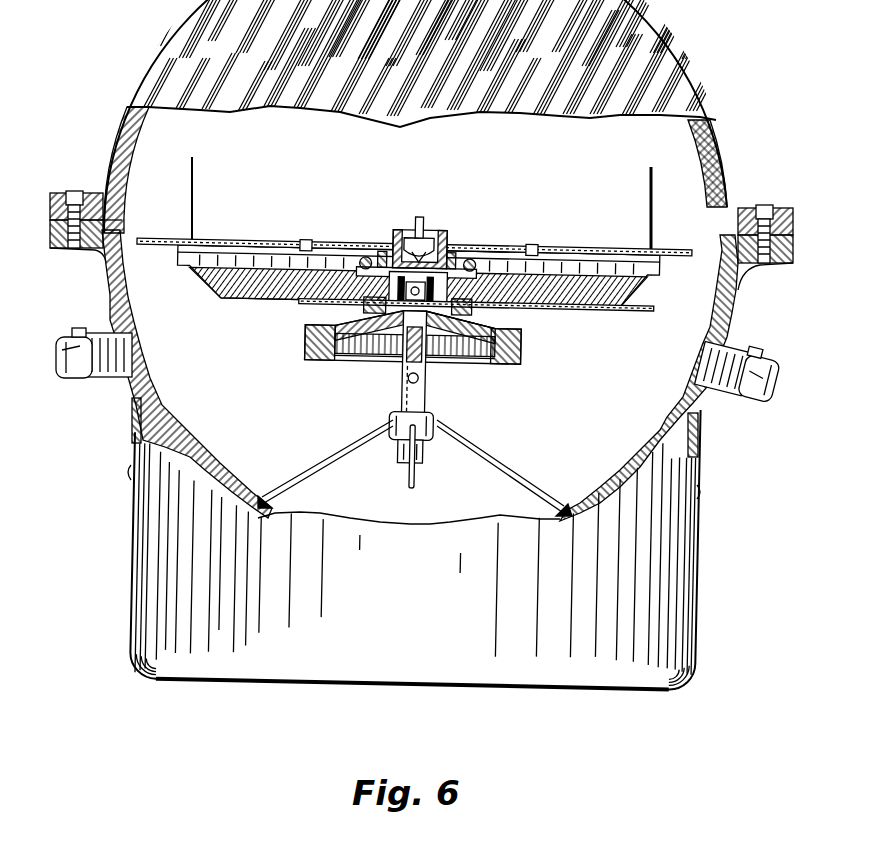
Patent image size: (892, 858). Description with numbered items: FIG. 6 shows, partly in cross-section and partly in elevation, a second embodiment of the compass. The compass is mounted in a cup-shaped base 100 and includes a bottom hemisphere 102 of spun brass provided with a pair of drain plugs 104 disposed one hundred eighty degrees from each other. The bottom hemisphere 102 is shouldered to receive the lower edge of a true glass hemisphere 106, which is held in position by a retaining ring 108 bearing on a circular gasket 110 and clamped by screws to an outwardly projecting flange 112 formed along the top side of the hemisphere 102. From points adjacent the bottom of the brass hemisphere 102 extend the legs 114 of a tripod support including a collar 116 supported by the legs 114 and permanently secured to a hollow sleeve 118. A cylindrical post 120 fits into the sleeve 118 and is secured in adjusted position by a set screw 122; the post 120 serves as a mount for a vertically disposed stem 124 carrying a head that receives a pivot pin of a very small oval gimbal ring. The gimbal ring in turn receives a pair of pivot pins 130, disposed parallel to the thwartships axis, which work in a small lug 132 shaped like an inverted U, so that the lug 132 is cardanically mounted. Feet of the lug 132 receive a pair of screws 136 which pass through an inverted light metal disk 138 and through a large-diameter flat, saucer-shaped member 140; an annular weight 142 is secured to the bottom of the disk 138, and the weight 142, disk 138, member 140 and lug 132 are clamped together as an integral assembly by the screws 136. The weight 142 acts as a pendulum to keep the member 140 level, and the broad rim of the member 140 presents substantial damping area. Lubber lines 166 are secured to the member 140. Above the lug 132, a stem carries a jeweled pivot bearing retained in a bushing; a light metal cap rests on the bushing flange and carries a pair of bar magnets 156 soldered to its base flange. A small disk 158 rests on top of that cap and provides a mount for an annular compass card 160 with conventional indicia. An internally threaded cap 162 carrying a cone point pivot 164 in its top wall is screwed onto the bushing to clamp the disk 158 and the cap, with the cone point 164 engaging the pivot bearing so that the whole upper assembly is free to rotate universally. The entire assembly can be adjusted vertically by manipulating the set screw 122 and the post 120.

The cup-shaped base 100 is at (704, 528).
The bottom hemisphere 102 is at (734, 326).
The drain plugs 104 is at (68, 338).
The glass hemisphere 106 is at (122, 120).
The retaining ring 108 is at (66, 196).
The circular gasket 110 is at (120, 218).
The outwardly projecting flange 112 is at (772, 265).
The legs 114 is at (474, 440).
The collar 116 is at (440, 420).
The hollow sleeve 118 is at (430, 380).
The cylindrical post 120 is at (398, 344).
The set screw 122 is at (410, 378).
The stem 124 is at (376, 314).
The pivot pins 130 is at (388, 290).
The lug 132 is at (448, 284).
The screws 136 is at (426, 312).
The inverted light metal disk 138 is at (505, 320).
The saucer-shaped member 140 is at (620, 305).
The annular weight 142 is at (525, 348).
The bar magnets 156 is at (358, 266).
The small disk 158 is at (495, 249).
The annular compass card 160 is at (578, 250).
The internally threaded cap 162 is at (400, 232).
The cone point pivot 164 is at (440, 234).
The lubber lines 166 is at (654, 188).